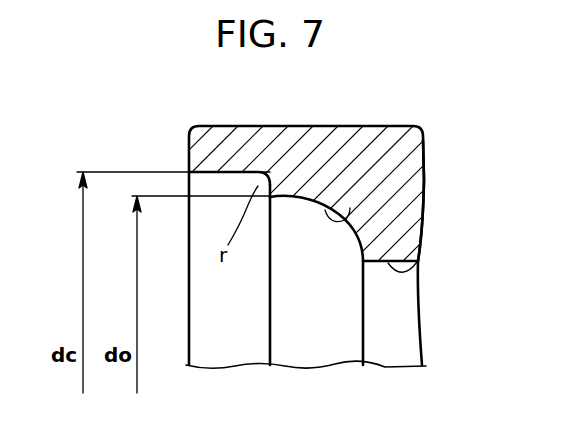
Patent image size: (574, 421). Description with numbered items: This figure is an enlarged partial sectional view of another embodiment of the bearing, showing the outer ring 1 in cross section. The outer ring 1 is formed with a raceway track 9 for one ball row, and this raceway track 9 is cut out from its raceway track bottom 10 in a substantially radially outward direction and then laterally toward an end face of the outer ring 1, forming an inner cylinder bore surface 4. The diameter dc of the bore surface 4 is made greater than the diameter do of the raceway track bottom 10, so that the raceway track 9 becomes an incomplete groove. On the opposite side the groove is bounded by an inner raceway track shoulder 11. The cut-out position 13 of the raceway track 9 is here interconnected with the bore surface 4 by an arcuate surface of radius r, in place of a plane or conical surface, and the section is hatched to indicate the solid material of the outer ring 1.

The outer ring 1 is at (392, 148).
The inner cylinder bore surface 4 is at (216, 172).
The raceway track 9 is at (405, 170).
The raceway track bottom 10 is at (314, 200).
The inner raceway track shoulder 11 is at (417, 262).
The cut-out position 13 is at (310, 198).